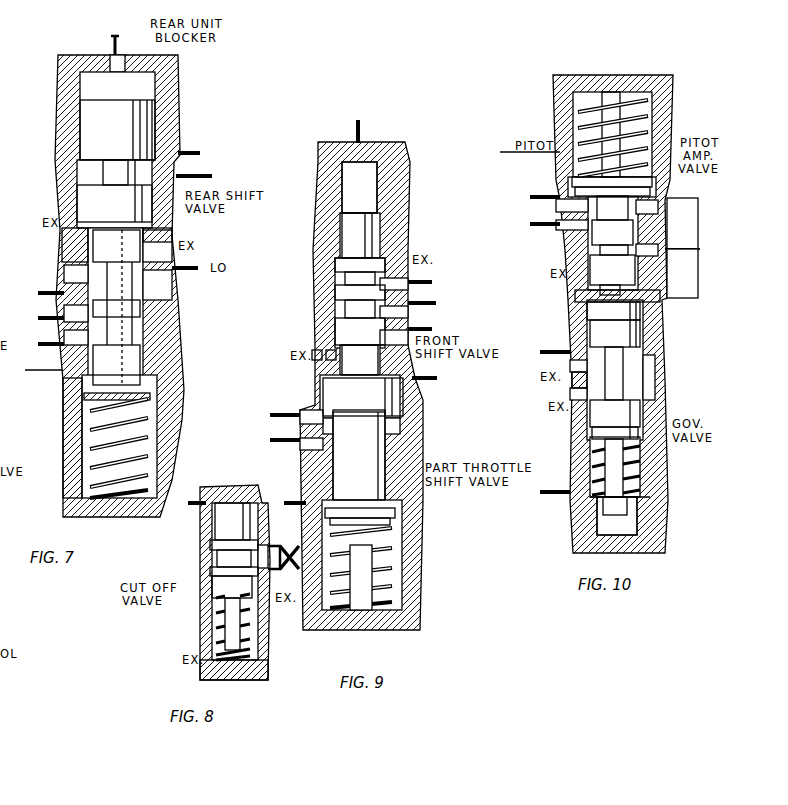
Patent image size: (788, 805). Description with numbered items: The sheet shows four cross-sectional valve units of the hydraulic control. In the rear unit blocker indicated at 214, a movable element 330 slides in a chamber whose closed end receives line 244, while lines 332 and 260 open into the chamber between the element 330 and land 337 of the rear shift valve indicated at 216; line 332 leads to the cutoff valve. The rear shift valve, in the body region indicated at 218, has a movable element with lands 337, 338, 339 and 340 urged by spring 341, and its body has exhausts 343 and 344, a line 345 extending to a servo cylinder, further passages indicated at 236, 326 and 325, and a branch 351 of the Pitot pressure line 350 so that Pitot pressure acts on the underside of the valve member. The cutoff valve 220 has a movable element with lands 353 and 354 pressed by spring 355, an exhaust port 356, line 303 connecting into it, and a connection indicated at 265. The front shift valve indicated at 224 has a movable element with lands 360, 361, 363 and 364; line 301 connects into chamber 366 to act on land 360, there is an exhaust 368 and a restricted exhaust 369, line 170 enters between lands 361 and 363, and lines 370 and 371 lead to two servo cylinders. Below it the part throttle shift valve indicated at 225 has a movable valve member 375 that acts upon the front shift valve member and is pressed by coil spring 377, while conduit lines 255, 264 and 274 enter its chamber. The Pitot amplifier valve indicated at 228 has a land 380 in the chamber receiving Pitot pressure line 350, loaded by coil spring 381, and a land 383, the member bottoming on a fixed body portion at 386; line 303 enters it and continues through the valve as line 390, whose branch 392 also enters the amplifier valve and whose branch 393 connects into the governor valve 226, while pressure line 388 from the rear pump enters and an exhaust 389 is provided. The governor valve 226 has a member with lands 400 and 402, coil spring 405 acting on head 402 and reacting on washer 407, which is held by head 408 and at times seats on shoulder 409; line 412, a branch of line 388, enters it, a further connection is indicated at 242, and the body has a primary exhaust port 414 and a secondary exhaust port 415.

In FIG. 7, the rear unit blocker valve body 214 is at (186, 78).
In FIG. 7, the line 244 is at (112, 42).
In FIG. 7, the movable element 330 is at (160, 113).
In FIG. 7, the line 332 is at (201, 152).
In FIG. 8, the line 332 is at (285, 570).
In FIG. 7, the line 260 is at (205, 176).
In FIG. 7, the land 337 is at (114, 191).
In FIG. 7, the rear shift valve 216 is at (44, 207).
In FIG. 7, the exhaust 343 is at (62, 230).
In FIG. 7, the land 338 is at (116, 307).
In FIG. 7, the exhaust 344 is at (178, 233).
In FIG. 7, the line 345 is at (178, 275).
In FIG. 7, the passage 236 is at (50, 280).
In FIG. 7, the land 339 is at (116, 309).
In FIG. 7, the passage 326 is at (55, 310).
In FIG. 7, the passage 325 is at (55, 332).
In FIG. 7, the valve bore 218 is at (200, 342).
In FIG. 7, the land 340 is at (116, 365).
In FIG. 7, the branch 351 is at (32, 372).
In FIG. 7, the spring 341 is at (90, 445).
In FIG. 8, the cutoff valve 220 is at (205, 572).
In FIG. 8, the line 303 is at (196, 500).
In FIG. 10, the line 303 is at (528, 196).
In FIG. 8, the land 353 is at (222, 520).
In FIG. 8, the restriction 265 is at (276, 546).
In FIG. 8, the land 354 is at (215, 585).
In FIG. 8, the spring 355 is at (252, 655).
In FIG. 8, the exhaust port 356 is at (205, 672).
In FIG. 9, the front shift valve 224 is at (302, 327).
In FIG. 9, the line 301 is at (365, 125).
In FIG. 9, the chamber 366 is at (362, 185).
In FIG. 9, the land 360 is at (378, 220).
In FIG. 9, the exhaust 368 is at (405, 250).
In FIG. 9, the line 370 is at (425, 281).
In FIG. 9, the line 170 is at (428, 303).
In FIG. 9, the line 371 is at (426, 328).
In FIG. 9, the land 361 is at (345, 293).
In FIG. 9, the land 363 is at (345, 340).
In FIG. 9, the restricted exhaust 369 is at (312, 355).
In FIG. 9, the land 364 is at (330, 388).
In FIG. 9, the conduit line 255 is at (285, 403).
In FIG. 9, the conduit line 264 is at (293, 432).
In FIG. 9, the conduit line 274 is at (292, 501).
In FIG. 9, the movable valve member 375 is at (388, 460).
In FIG. 9, the part throttle shift valve 225 is at (425, 530).
In FIG. 9, the coil spring 377 is at (395, 562).
In FIG. 10, the pitot amplifier valve 228 is at (688, 188).
In FIG. 10, the coil spring 381 is at (650, 100).
In FIG. 10, the land 380 is at (662, 150).
In FIG. 10, the pressure line 350 is at (512, 150).
In FIG. 10, the land 383 is at (612, 257).
In FIG. 10, the pressure line 388 is at (528, 226).
In FIG. 10, the exhaust 389 is at (578, 267).
In FIG. 10, the fixed portion of the valve body 386 is at (592, 286).
In FIG. 10, the line 390 is at (698, 215).
In FIG. 10, the branch 392 is at (698, 247).
In FIG. 10, the branch 393 is at (700, 265).
In FIG. 10, the land 400 is at (645, 315).
In FIG. 10, the line 412 is at (550, 351).
In FIG. 10, the governor valve 226 is at (672, 380).
In FIG. 10, the primary exhaust port 414 is at (572, 390).
In FIG. 10, the land 402 is at (640, 402).
In FIG. 10, the secondary exhaust port 415 is at (575, 408).
In FIG. 10, the coil spring 405 is at (645, 470).
In FIG. 10, the washer 407 is at (650, 496).
In FIG. 10, the shoulder 409 is at (635, 505).
In FIG. 10, the head 408 is at (640, 525).
In FIG. 10, the passage 242 is at (550, 494).